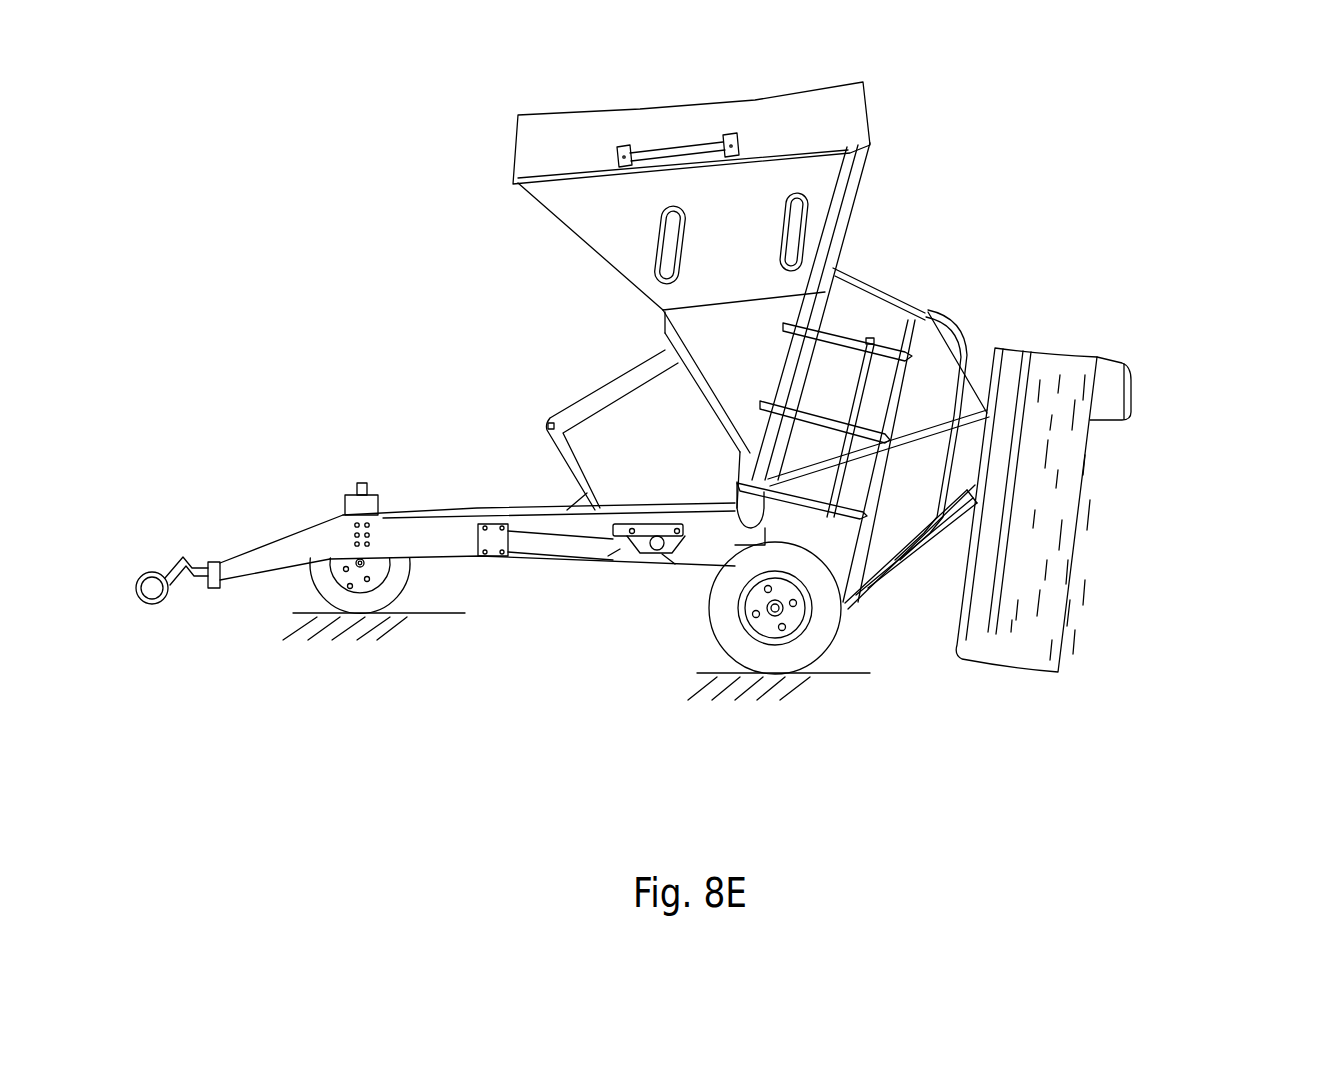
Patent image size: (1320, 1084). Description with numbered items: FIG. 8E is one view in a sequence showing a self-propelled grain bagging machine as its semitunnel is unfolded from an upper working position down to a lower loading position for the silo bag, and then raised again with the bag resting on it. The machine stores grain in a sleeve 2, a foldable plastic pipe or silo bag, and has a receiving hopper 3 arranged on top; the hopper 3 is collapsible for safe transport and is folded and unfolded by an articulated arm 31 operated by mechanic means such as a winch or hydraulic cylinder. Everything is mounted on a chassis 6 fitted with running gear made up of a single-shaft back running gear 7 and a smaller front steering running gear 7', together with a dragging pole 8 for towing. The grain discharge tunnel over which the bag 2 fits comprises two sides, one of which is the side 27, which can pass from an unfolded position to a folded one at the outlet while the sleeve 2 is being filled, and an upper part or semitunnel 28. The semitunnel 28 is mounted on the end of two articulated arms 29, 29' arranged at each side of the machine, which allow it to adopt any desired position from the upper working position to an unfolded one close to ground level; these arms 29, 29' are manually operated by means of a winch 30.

The sleeve 2 is at (1052, 380).
The receiving hopper 3 is at (853, 205).
The chassis 6 is at (448, 545).
The back running gear 7 is at (866, 632).
The front steering running gear 7' is at (374, 638).
The dragging pole 8 is at (222, 570).
The side of the discharge tunnel 27 is at (950, 343).
The semitunnel 28 is at (1113, 367).
The articulated arm 29 is at (988, 546).
The articulated arm 29' is at (1056, 547).
The winch 30 is at (617, 552).
The articulated arm 31 is at (585, 395).